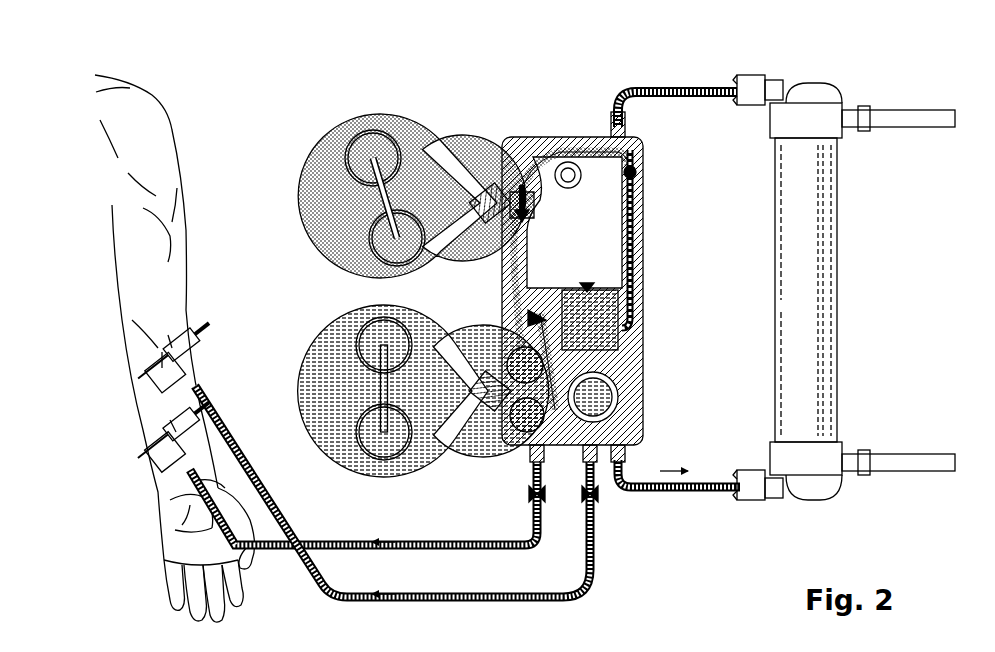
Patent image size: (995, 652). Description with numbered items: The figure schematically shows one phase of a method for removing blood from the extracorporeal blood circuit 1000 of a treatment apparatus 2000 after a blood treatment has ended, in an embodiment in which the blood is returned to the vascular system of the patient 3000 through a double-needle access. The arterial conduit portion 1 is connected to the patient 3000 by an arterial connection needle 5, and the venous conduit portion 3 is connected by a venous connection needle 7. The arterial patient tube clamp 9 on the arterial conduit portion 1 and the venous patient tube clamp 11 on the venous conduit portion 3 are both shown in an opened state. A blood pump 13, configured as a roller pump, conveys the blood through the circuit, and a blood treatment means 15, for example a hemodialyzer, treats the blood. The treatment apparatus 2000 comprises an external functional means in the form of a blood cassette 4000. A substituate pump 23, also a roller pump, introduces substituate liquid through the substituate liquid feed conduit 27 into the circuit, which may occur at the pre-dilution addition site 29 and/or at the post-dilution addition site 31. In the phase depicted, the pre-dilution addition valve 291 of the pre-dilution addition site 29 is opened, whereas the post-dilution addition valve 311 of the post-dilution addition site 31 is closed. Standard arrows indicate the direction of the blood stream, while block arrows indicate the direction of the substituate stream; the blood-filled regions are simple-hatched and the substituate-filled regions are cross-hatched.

The arterial conduit portion 1 is at (427, 542).
The venous conduit portion 3 is at (583, 584).
The arterial connection needle 5 is at (166, 437).
The venous connection needle 7 is at (188, 337).
The arterial patient tube clamp 9 is at (528, 488).
The venous patient tube clamp 11 is at (596, 503).
The blood pump 13 is at (330, 370).
The blood treatment means 15 is at (850, 232).
The substituate pump 23 is at (330, 176).
The substituate liquid feed conduit 27 is at (522, 165).
The pre-dilution addition site 29 is at (520, 305).
The pre-dilution addition valve 291 is at (522, 318).
The post-dilution addition site 31 is at (634, 180).
The post-dilution addition valve 311 is at (632, 165).
The extracorporeal blood circuit 1000 is at (385, 165).
The treatment apparatus 2000 is at (486, 148).
The patient 3000 is at (165, 145).
The blood cassette 4000 is at (551, 252).